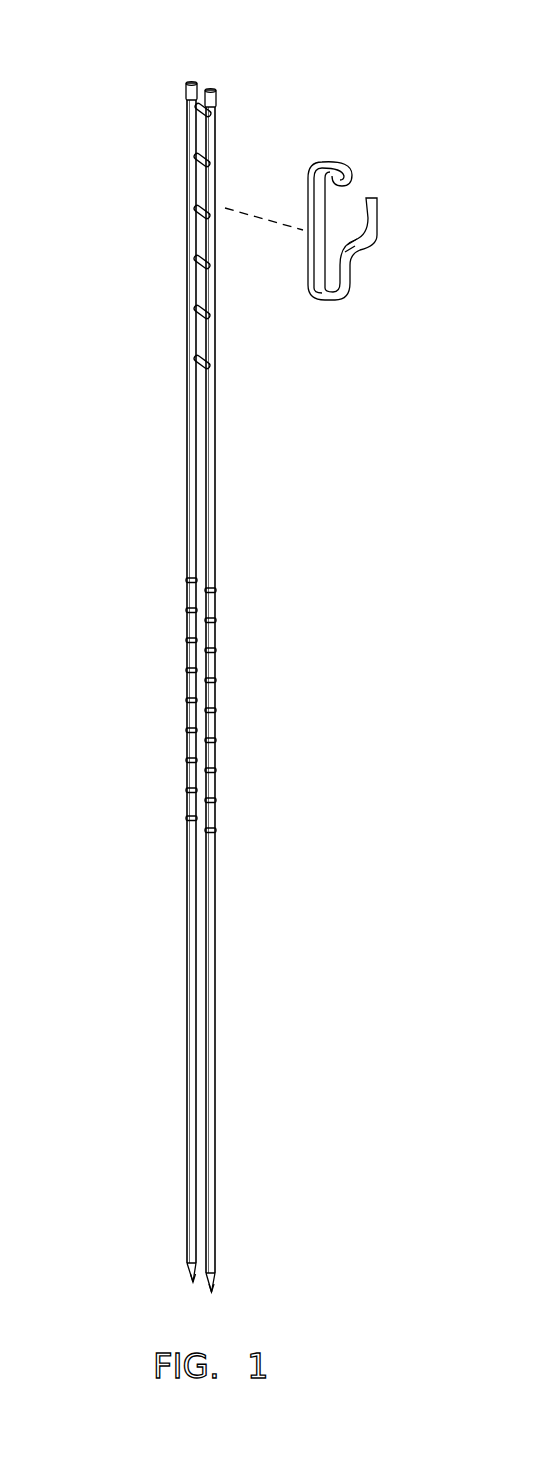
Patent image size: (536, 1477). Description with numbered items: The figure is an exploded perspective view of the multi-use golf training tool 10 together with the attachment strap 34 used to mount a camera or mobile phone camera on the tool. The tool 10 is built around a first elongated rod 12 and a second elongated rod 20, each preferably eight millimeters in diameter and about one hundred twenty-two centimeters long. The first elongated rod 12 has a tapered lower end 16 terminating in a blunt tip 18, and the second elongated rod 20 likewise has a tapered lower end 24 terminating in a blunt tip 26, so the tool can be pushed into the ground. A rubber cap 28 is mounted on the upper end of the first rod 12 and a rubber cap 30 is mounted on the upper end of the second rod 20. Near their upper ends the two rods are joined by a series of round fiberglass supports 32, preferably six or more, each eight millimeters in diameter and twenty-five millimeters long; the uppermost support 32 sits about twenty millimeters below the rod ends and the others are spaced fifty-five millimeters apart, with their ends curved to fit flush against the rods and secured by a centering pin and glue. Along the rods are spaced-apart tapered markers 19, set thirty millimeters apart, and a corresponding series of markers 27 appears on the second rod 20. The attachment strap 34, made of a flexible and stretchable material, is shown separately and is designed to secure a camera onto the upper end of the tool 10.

The multi-use golf training tool 10 is at (241, 656).
The first elongated rod 12 is at (115, 686).
The tapered lower end 16 is at (191, 1263).
The blunt tip 18 is at (188, 1282).
The tapered markers 19 is at (188, 788).
The second elongated rod 20 is at (312, 686).
The tapered lower end 24 is at (217, 1273).
The blunt tip 26 is at (212, 1292).
The bands on second rod 27 is at (215, 762).
The rubber cap 28 is at (187, 85).
The rubber cap 30 is at (217, 93).
The round fiberglass supports 32 is at (193, 208).
The attachment strap 34 is at (333, 150).